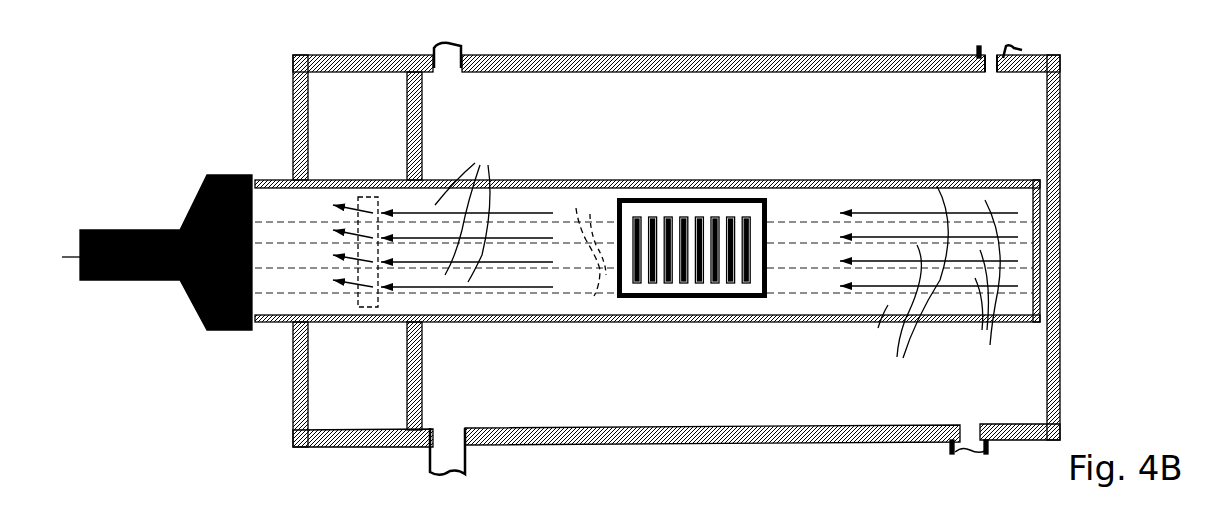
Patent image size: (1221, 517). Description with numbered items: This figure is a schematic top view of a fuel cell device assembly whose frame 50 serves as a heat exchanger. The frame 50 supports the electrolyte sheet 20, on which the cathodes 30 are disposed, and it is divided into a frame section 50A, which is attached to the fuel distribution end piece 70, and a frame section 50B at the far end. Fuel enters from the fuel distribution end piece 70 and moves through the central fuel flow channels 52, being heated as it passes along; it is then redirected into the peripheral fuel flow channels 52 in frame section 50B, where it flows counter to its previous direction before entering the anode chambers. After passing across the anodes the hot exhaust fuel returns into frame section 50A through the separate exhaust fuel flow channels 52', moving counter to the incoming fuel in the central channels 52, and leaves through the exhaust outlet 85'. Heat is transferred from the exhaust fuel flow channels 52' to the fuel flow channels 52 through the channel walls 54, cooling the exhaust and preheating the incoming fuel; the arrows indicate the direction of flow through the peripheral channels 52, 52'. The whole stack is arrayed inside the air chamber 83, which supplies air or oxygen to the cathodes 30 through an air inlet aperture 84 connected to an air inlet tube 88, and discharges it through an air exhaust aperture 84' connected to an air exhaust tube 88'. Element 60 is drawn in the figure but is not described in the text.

The electrolyte sheet 20 is at (663, 298).
The cathodes 30 is at (700, 288).
The frame 50 is at (1020, 325).
The frame section 50A is at (253, 178).
The frame section 50B is at (1037, 170).
The fuel flow channels 52 is at (995, 283).
The exhaust fuel flow channels 52' is at (508, 214).
The channel walls 54 is at (762, 289).
The electrode plate 60 is at (769, 281).
The fuel distribution end piece 70 is at (190, 197).
The air chamber 83 is at (704, 410).
The air inlet aperture 84 is at (985, 250).
The air exhaust aperture 84' is at (462, 422).
The exhaust outlet 85' is at (369, 292).
The air inlet tube 88 is at (975, 261).
The air exhaust tube 88' is at (478, 465).